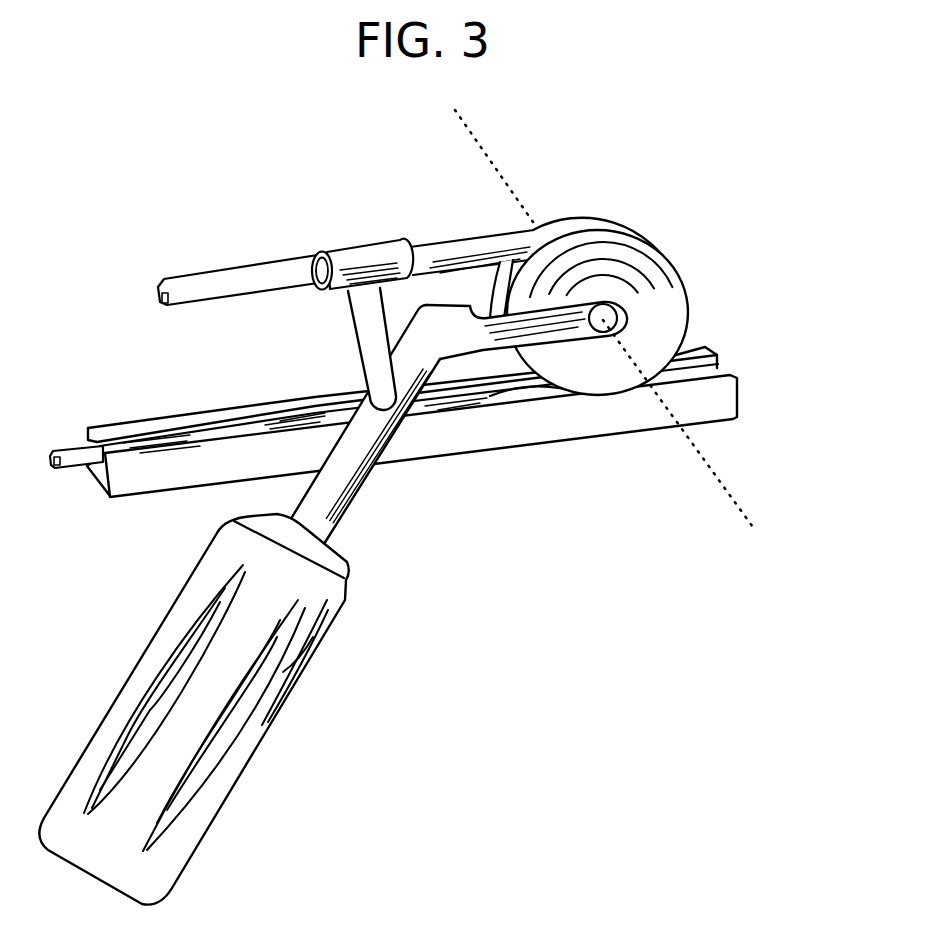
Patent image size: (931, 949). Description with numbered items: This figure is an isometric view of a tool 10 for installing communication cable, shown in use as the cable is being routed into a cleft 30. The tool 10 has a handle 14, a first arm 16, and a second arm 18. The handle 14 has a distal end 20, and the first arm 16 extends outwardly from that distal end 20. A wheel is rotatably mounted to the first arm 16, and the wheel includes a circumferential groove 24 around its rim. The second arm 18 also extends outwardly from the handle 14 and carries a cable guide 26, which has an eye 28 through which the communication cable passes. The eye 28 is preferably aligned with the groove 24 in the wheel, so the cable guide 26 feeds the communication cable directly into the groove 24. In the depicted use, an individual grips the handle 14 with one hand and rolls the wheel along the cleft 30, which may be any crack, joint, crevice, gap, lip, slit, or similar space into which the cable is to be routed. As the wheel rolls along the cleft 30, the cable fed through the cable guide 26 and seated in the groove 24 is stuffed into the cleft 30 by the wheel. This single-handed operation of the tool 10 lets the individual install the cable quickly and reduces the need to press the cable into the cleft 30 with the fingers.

The tool 10 is at (397, 507).
The handle 14 is at (298, 515).
The first arm 16 is at (433, 306).
The second arm 18 is at (358, 343).
The distal end 20 is at (437, 362).
The circumferential groove 24 is at (508, 288).
The cable guide 26 is at (360, 245).
The eye 28 is at (313, 258).
The cleft 30 is at (717, 367).